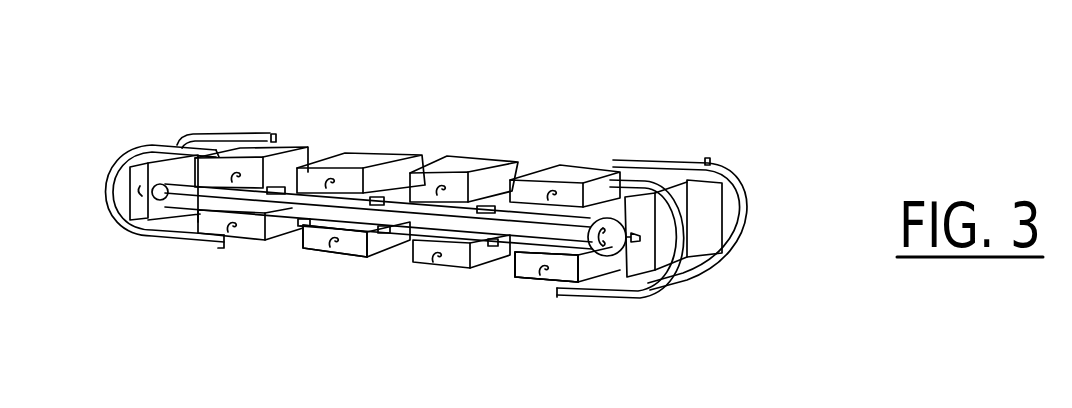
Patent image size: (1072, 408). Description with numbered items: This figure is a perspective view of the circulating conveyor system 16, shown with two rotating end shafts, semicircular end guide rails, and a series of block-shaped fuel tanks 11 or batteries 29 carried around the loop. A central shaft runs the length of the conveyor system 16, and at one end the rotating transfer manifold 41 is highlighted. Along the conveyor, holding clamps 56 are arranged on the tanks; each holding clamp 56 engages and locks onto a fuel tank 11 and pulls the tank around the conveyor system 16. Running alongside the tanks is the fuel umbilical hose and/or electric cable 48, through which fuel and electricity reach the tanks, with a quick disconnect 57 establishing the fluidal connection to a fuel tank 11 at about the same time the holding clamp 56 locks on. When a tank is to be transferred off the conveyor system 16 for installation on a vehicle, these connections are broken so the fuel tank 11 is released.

The conveyor system 16 is at (105, 120).
The transfer manifold 41 is at (610, 213).
The fuel tank 11 is at (345, 253).
The battery 29 is at (335, 241).
The fuel umbilical hose and/or electric cable 48 is at (533, 277).
The holding clamp 56 is at (546, 267).
The quick disconnect 57 is at (546, 267).